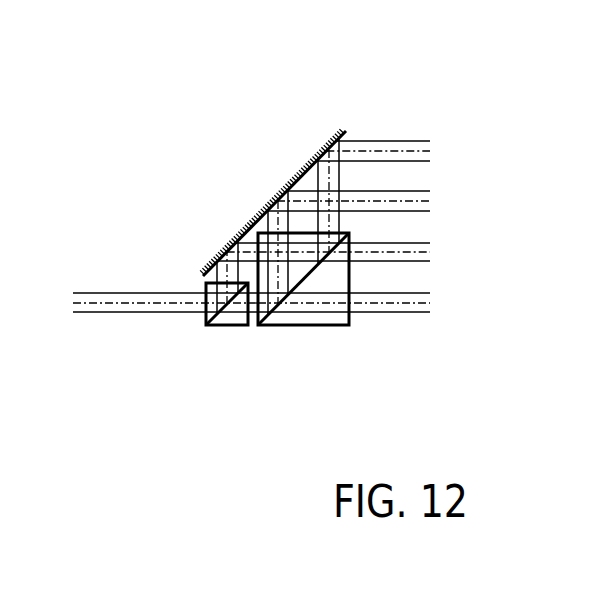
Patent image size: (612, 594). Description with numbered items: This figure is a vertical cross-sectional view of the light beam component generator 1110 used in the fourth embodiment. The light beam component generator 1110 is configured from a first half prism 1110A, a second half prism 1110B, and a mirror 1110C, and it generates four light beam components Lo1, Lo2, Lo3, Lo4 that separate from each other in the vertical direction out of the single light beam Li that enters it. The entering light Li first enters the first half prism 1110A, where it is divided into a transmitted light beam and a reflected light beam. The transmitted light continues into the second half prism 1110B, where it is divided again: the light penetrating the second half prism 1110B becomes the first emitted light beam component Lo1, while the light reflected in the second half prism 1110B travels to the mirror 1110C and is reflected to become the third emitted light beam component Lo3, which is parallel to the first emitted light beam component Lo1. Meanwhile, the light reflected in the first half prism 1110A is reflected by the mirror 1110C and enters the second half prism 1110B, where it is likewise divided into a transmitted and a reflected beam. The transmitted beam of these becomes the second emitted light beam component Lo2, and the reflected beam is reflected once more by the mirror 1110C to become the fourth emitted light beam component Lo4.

The light beam component generator 1110 is at (226, 118).
The first half prism 1110A is at (225, 333).
The second half prism 1110B is at (317, 333).
The mirror 1110C is at (302, 162).
The light beam Li is at (117, 283).
The first emitted light beam component Lo1 is at (393, 283).
The second emitted light beam component Lo2 is at (393, 234).
The third emitted light beam component Lo3 is at (393, 181).
The fourth emitted light beam component Lo4 is at (393, 133).